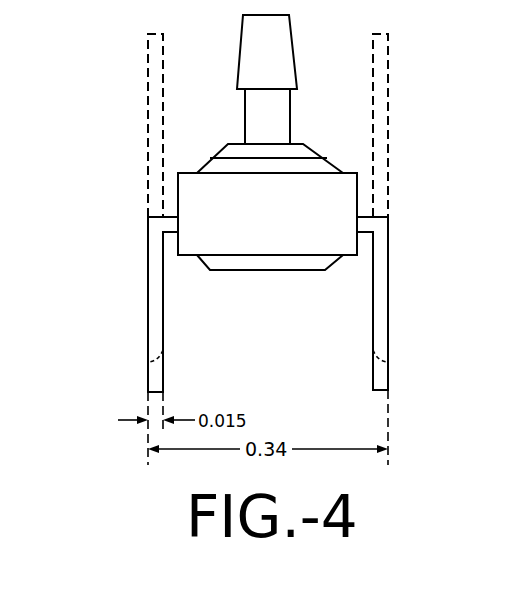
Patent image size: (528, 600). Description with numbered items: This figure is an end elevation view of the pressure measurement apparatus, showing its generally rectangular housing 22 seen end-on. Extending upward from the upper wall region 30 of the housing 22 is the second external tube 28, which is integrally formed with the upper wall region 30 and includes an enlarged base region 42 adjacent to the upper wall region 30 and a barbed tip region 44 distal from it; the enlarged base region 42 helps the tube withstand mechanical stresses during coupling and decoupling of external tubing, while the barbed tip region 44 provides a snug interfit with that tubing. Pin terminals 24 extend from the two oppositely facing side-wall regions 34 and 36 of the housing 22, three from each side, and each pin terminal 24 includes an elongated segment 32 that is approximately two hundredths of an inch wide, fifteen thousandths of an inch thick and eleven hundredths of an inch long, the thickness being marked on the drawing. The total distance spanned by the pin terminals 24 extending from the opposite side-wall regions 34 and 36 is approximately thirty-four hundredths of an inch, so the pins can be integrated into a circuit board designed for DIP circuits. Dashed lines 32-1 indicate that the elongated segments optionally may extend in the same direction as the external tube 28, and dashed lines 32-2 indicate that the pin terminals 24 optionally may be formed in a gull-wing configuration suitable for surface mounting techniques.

The housing 22 is at (348, 162).
The pin terminals 24 is at (124, 262).
The second external tube 28 is at (291, 107).
The upper wall region 30 is at (212, 157).
The elongated segment 32 is at (147, 298).
The dashed lines 32-1 is at (147, 127).
The dashed lines 32-2 is at (148, 354).
The side-wall region 34 is at (358, 247).
The side-wall region 36 is at (177, 240).
The enlarged base region 42 is at (227, 143).
The barbed tip region 44 is at (293, 43).